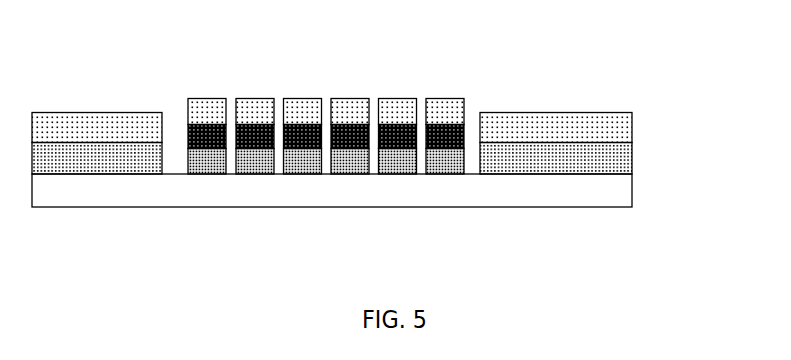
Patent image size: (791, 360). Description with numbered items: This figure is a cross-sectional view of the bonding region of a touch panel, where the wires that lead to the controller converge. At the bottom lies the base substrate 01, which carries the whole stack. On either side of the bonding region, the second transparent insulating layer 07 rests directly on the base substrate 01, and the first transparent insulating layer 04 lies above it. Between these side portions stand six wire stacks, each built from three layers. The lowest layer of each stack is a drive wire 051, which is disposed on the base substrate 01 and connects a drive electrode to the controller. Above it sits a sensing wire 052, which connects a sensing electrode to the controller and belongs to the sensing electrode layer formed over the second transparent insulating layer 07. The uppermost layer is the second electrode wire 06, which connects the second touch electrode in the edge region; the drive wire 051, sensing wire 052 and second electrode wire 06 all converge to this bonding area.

The base substrate 01 is at (633, 189).
The first transparent insulating layer 04 is at (628, 127).
The second transparent insulating layer 07 is at (628, 158).
The second electrode wire 06 is at (305, 113).
The drive wire 051 is at (350, 163).
The sensing wire 052 is at (208, 126).